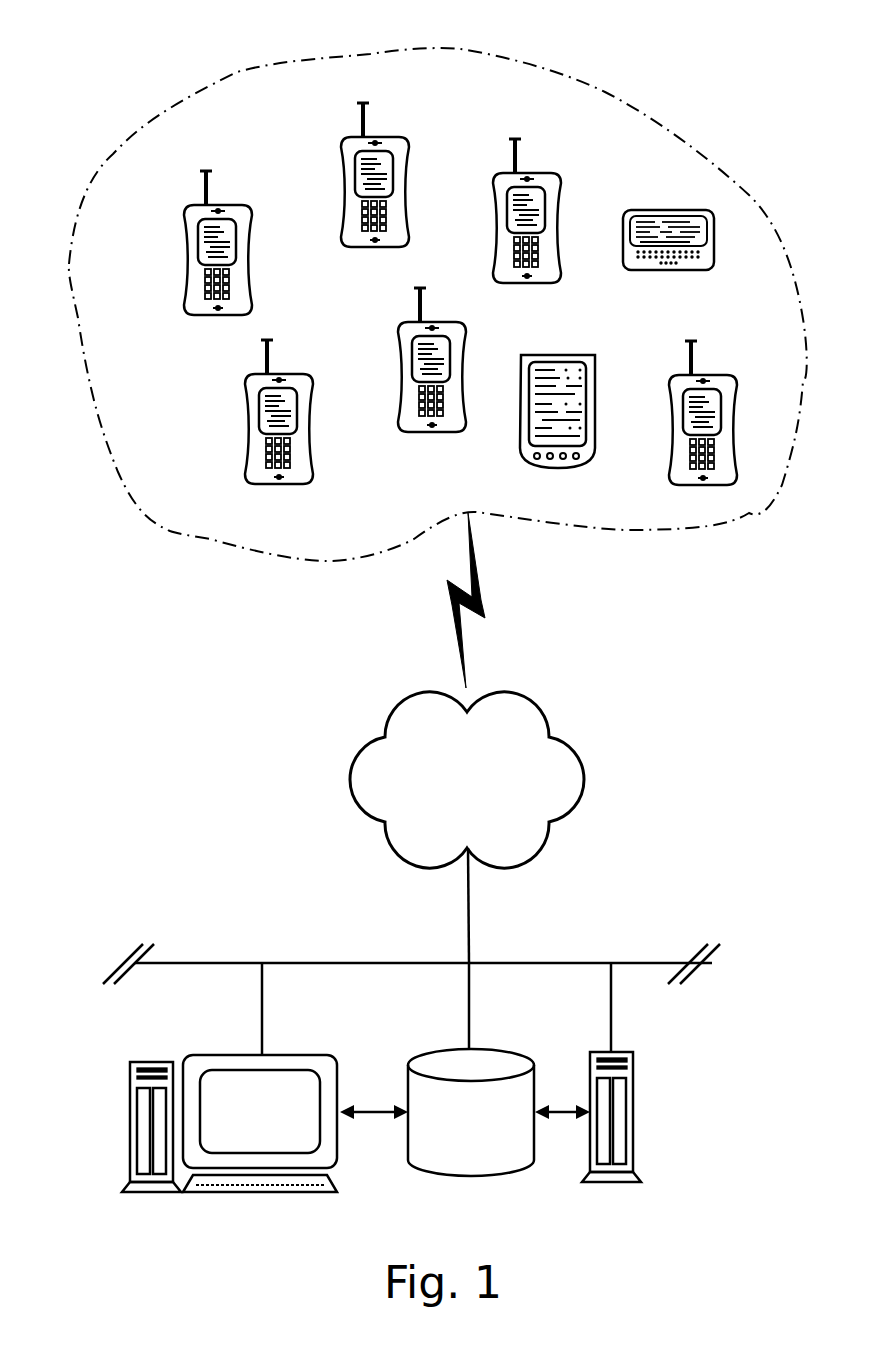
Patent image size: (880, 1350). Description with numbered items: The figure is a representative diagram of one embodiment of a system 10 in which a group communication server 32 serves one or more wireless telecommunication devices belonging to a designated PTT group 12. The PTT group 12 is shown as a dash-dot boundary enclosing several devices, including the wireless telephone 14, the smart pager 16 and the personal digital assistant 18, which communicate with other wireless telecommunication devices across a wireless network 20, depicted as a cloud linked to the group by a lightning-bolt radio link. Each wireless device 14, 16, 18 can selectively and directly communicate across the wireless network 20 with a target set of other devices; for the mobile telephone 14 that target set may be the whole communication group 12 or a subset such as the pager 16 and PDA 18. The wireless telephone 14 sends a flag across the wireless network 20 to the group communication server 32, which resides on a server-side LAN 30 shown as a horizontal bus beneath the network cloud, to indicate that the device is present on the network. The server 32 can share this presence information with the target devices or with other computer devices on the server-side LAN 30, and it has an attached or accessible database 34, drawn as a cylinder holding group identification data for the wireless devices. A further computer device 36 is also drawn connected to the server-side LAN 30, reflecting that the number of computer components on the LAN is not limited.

The system 10 is at (732, 76).
The PTT group 12 is at (160, 532).
The wireless telephone 14 is at (400, 136).
The smart pager 16 is at (673, 270).
The personal digital assistant 18 is at (520, 431).
The wireless network 20 is at (584, 779).
The server-side LAN 30 is at (238, 963).
The group communication server 32 is at (228, 1055).
The database 34 is at (408, 1142).
The server 36 is at (633, 1157).